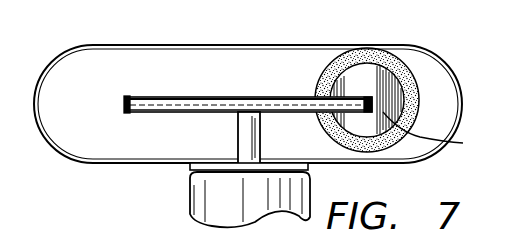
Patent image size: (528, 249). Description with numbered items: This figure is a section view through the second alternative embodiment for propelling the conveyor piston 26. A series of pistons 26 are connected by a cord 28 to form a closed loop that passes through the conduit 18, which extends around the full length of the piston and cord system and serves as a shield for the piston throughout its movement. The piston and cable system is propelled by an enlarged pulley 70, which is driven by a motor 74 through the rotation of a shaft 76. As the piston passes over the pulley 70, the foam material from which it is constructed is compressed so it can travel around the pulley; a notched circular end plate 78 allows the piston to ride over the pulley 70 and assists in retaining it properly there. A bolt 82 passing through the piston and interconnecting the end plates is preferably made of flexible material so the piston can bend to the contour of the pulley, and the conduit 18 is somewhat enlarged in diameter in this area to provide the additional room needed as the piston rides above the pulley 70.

The conduit 18 is at (464, 70).
The conveyor piston 26 is at (398, 67).
The cord 28 is at (125, 104).
The pulley 70 is at (166, 99).
The motor 74 is at (240, 206).
The shaft 76 is at (239, 137).
The circular end plate 78 is at (361, 78).
The bolt 82 is at (438, 137).